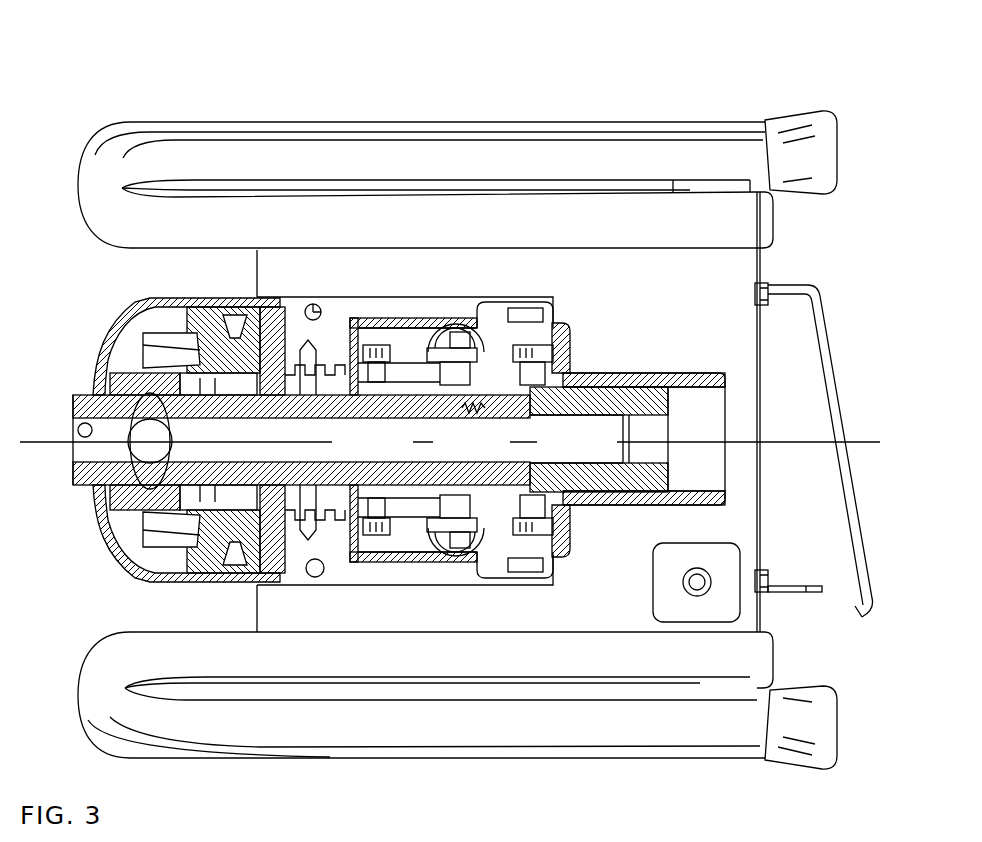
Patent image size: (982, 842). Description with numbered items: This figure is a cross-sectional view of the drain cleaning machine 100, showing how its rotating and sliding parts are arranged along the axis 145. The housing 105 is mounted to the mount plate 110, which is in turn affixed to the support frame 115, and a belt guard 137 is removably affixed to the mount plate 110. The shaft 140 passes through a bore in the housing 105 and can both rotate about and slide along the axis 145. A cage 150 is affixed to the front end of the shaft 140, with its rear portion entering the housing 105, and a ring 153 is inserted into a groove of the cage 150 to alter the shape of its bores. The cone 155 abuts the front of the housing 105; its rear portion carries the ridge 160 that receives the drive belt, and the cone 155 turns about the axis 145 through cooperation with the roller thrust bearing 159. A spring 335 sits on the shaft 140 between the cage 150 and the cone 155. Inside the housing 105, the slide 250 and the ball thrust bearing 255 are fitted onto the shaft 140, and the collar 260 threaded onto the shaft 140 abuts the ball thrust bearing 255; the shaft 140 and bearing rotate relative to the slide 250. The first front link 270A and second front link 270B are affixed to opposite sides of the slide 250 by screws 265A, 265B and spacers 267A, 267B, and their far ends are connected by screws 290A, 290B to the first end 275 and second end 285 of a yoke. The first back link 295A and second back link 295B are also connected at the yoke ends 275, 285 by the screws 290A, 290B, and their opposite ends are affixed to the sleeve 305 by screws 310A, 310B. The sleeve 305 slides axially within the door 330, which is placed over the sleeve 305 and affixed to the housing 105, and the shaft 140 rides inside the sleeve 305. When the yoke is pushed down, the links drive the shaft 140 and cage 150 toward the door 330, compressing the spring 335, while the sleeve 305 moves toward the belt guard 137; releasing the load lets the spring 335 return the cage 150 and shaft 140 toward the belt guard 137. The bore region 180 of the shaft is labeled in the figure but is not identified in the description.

The drain cleaning machine 100 is at (624, 63).
The housing 105 is at (482, 318).
The mount plate 110 is at (257, 612).
The support frame 115 is at (450, 752).
The belt guard 137 is at (108, 345).
The shaft 140 is at (640, 390).
The axis 145 is at (43, 440).
The cage 150 is at (83, 397).
The ring 153 is at (140, 512).
The cone 155 is at (197, 298).
The roller thrust bearing 159 is at (140, 578).
The ridge 160 is at (237, 298).
The shaft bore 180 is at (72, 455).
The slide 250 is at (310, 580).
The ball thrust bearing 255 is at (435, 335).
The collar 260 is at (413, 442).
The screw 265A is at (362, 345).
The first bearing lower 265B is at (388, 585).
The spacer 267A is at (405, 362).
The spacer 267B is at (413, 585).
The first front link 270A is at (445, 348).
The second front link 270B is at (435, 535).
The first end of yoke 275 is at (484, 340).
The second end of yoke 285 is at (520, 485).
The screw 290A is at (558, 325).
The screw 290B is at (477, 537).
The first back link 295A is at (495, 412).
The second back link 295B is at (537, 523).
The sleeve 305 is at (647, 375).
The screw 310A is at (565, 352).
The screw 310B is at (583, 517).
The door 330 is at (745, 383).
The spring 335 is at (163, 347).